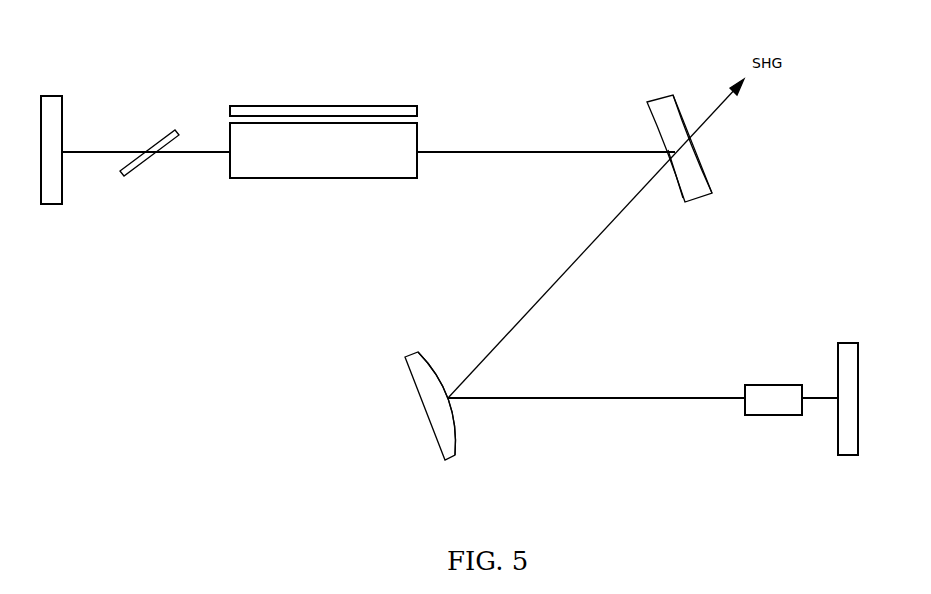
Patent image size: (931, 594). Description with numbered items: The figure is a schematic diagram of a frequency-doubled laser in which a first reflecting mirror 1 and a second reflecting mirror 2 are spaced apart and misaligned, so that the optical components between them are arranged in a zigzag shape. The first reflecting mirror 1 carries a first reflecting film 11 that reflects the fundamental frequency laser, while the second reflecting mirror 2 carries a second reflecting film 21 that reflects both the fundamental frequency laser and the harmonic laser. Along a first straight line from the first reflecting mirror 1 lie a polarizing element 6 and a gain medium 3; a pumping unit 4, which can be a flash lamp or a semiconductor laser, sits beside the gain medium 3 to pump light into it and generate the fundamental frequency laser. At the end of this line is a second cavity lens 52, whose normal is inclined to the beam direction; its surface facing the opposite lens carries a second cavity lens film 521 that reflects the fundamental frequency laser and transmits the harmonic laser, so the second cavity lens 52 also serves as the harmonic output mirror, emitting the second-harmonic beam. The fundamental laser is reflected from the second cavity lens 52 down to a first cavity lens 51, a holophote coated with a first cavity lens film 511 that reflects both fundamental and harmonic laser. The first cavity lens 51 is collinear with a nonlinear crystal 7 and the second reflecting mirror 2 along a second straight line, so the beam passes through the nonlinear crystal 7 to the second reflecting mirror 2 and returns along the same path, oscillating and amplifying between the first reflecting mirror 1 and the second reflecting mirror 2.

The first reflecting mirror 1 is at (48, 95).
The first reflecting film 11 is at (63, 180).
The polarizing element 6 is at (152, 138).
The pumping unit 4 is at (320, 106).
The gain medium 3 is at (327, 178).
The second cavity lens 52 is at (690, 205).
The second cavity lens film 521 is at (683, 182).
The first cavity lens 51 is at (445, 462).
The first cavity lens film 511 is at (430, 352).
The nonlinear crystal 7 is at (770, 385).
The second reflecting mirror 2 is at (843, 455).
The second reflecting film 21 is at (838, 365).